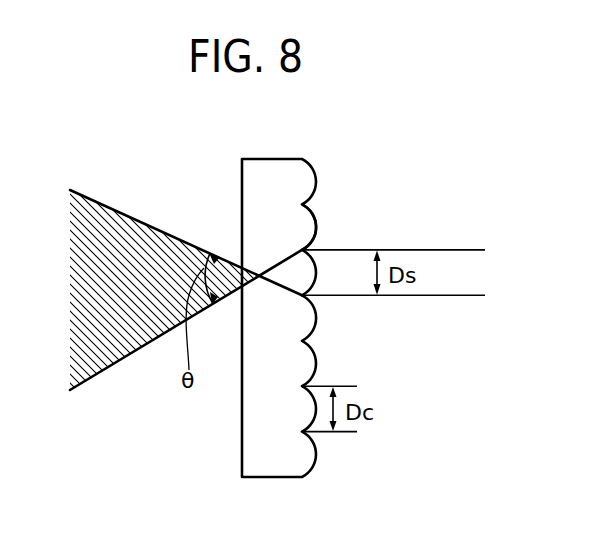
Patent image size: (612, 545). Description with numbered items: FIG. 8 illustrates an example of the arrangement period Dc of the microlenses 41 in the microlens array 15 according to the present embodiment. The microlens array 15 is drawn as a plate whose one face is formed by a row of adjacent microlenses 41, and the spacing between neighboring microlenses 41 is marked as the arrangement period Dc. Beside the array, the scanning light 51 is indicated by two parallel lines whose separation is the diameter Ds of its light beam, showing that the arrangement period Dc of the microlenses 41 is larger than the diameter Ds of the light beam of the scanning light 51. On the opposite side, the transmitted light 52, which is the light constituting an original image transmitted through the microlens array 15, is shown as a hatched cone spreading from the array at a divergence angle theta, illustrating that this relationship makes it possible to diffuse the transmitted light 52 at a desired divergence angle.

The microlens array 15 is at (275, 159).
The microlens 41 is at (315, 217).
The scanning light 51 is at (449, 250).
The transmitted light 52 is at (132, 218).